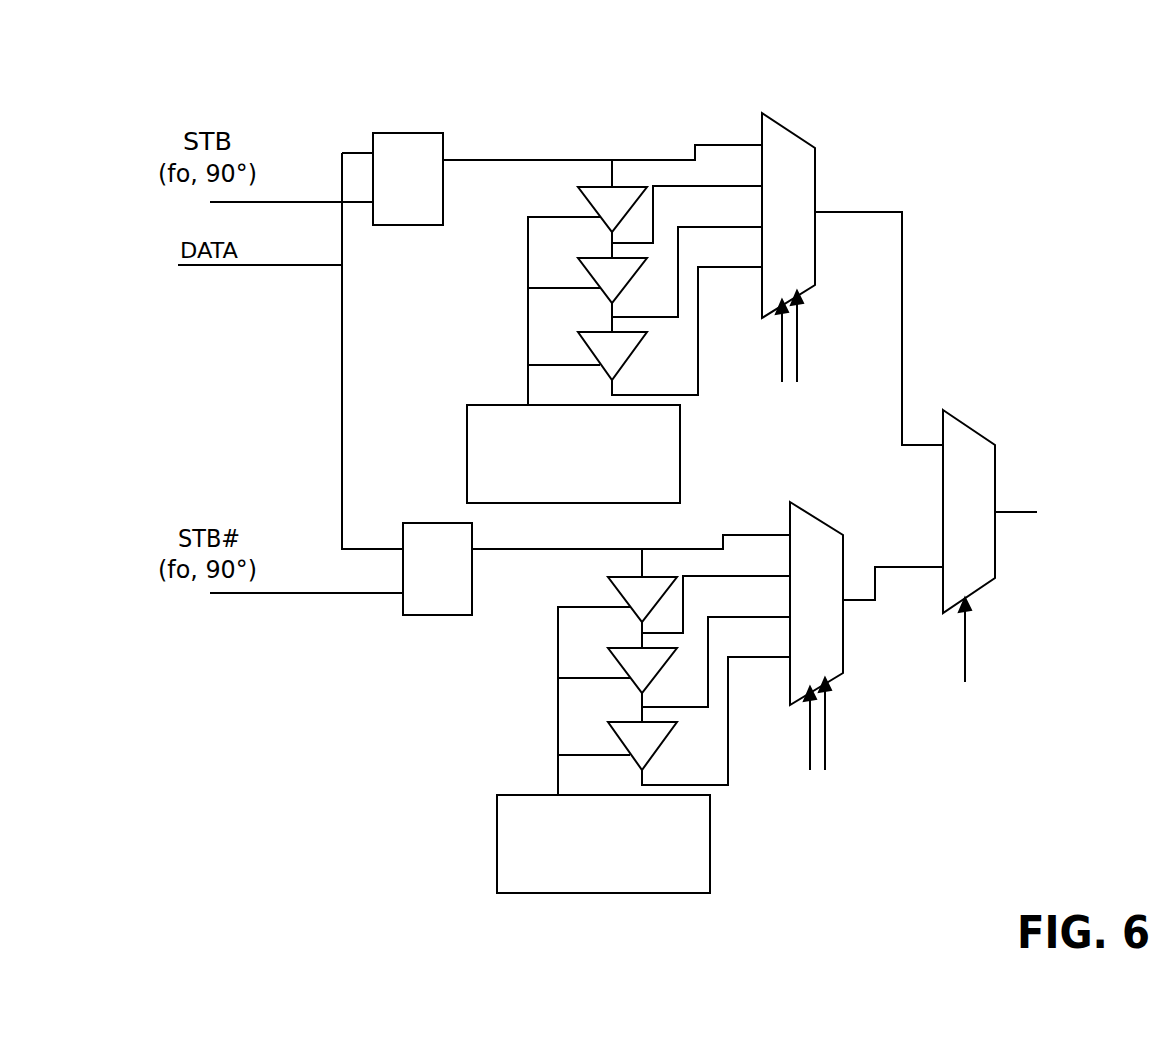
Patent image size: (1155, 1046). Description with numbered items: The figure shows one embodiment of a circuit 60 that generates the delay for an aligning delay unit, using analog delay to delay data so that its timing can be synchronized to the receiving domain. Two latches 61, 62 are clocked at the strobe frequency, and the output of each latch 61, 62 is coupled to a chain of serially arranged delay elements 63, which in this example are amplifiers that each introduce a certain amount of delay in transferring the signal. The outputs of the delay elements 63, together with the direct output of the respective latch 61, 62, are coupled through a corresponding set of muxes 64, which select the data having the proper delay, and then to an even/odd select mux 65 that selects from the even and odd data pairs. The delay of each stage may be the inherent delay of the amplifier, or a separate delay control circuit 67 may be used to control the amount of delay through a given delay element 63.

The circuit 60 is at (952, 125).
The latch 61 is at (435, 133).
The latch 62 is at (420, 616).
The delay element 63 is at (588, 200).
The mux 64 is at (787, 124).
The even/odd select mux 65 is at (971, 426).
The delay control circuit 67 is at (477, 405).